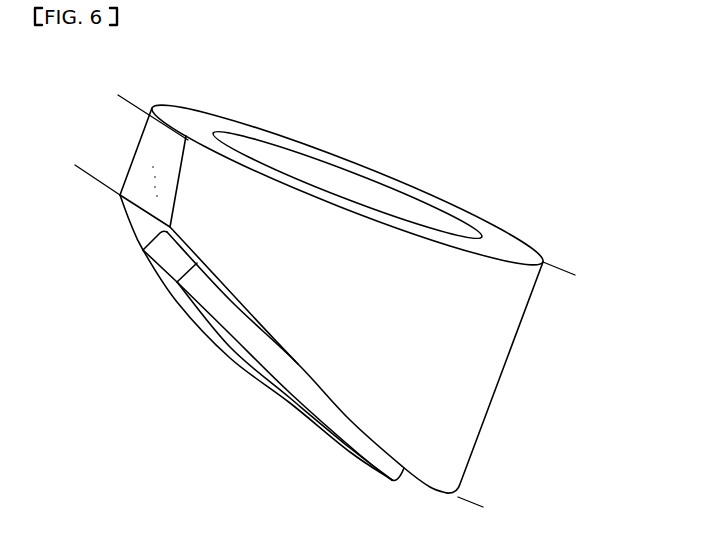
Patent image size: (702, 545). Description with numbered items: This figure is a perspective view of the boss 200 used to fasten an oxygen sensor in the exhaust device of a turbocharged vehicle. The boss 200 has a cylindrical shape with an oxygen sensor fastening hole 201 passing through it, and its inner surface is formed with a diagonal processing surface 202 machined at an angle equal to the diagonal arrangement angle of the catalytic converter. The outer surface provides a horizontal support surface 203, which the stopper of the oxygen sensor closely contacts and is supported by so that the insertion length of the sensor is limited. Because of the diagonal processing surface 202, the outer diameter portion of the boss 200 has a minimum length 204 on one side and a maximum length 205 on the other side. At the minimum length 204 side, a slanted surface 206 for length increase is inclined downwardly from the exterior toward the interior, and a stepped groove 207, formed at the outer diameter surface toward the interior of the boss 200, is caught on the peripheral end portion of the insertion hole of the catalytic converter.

The boss 200 is at (440, 158).
The oxygen sensor fastening hole 201 is at (290, 162).
The diagonal processing surface 202 is at (153, 268).
The horizontal support surface 203 is at (502, 243).
The minimum length 204 is at (125, 99).
The maximum length 205 is at (480, 503).
The slanted surface 206 is at (172, 150).
The stepped groove 207 is at (176, 284).